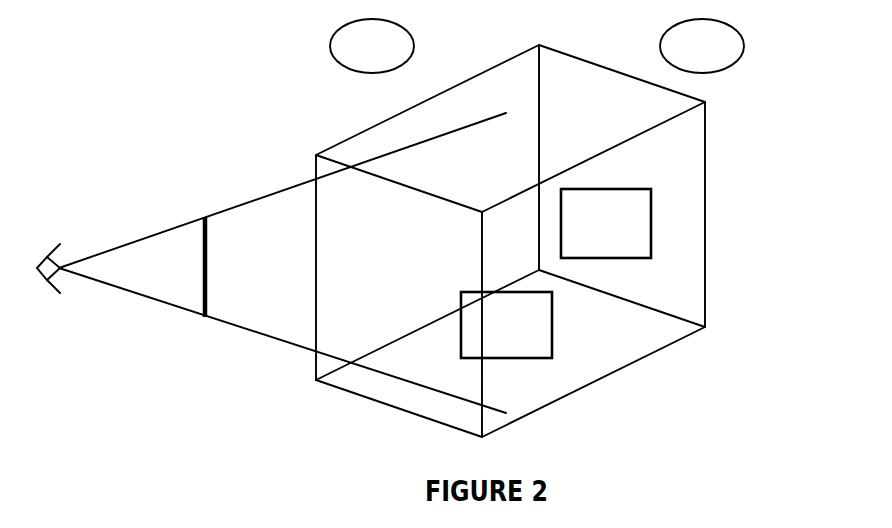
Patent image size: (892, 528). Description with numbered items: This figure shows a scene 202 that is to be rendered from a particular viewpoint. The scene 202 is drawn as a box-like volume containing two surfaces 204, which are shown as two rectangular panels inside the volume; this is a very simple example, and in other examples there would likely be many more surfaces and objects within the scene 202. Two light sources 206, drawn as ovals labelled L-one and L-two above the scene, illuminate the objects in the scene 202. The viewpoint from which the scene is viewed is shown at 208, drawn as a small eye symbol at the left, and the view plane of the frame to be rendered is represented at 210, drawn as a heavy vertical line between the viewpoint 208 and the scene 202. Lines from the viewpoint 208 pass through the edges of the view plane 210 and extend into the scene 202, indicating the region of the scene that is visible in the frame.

The scene 202 is at (707, 142).
The surfaces 204 is at (620, 305).
The light sources 206 is at (540, 46).
The viewpoint 208 is at (46, 256).
The view plane 210 is at (203, 230).